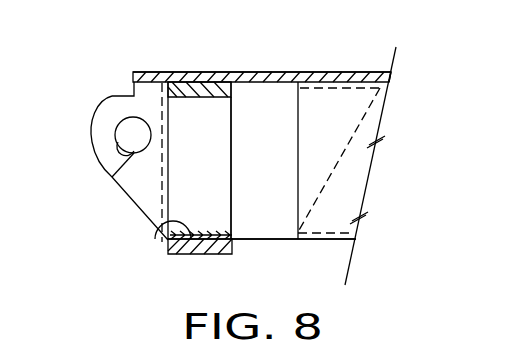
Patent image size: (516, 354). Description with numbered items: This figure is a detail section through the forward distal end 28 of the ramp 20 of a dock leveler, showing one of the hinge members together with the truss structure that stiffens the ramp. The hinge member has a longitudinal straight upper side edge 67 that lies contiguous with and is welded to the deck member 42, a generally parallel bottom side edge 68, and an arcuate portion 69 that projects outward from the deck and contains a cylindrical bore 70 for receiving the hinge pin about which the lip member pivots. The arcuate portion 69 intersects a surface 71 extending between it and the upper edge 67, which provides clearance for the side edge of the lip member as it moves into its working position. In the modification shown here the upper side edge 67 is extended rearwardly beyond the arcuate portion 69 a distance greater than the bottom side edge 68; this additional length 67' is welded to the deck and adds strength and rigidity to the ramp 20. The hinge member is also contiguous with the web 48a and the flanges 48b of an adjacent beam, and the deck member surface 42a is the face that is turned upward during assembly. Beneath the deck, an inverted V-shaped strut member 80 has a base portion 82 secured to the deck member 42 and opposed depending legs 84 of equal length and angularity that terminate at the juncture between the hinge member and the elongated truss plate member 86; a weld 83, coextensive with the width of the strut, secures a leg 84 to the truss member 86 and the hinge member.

The ramp 20 is at (259, 73).
The forward distal end of the ramp 28 is at (158, 187).
The deck member 42 is at (308, 72).
The deck member surface 42a is at (338, 88).
The web 48a is at (357, 180).
The beam flanges 48b is at (352, 88).
The upper side edge 67 is at (262, 60).
The additional length of the upper side edge 67' is at (358, 51).
The bottom side edge 68 is at (261, 241).
The arcuate portion 69 is at (91, 137).
The cylindrical bore 70 is at (112, 177).
The surface 71 is at (122, 95).
The strut member 80 is at (232, 127).
The base portion 82 is at (186, 97).
The weld 83 is at (158, 240).
The depending legs 84 is at (232, 185).
The truss plate member 86 is at (188, 255).